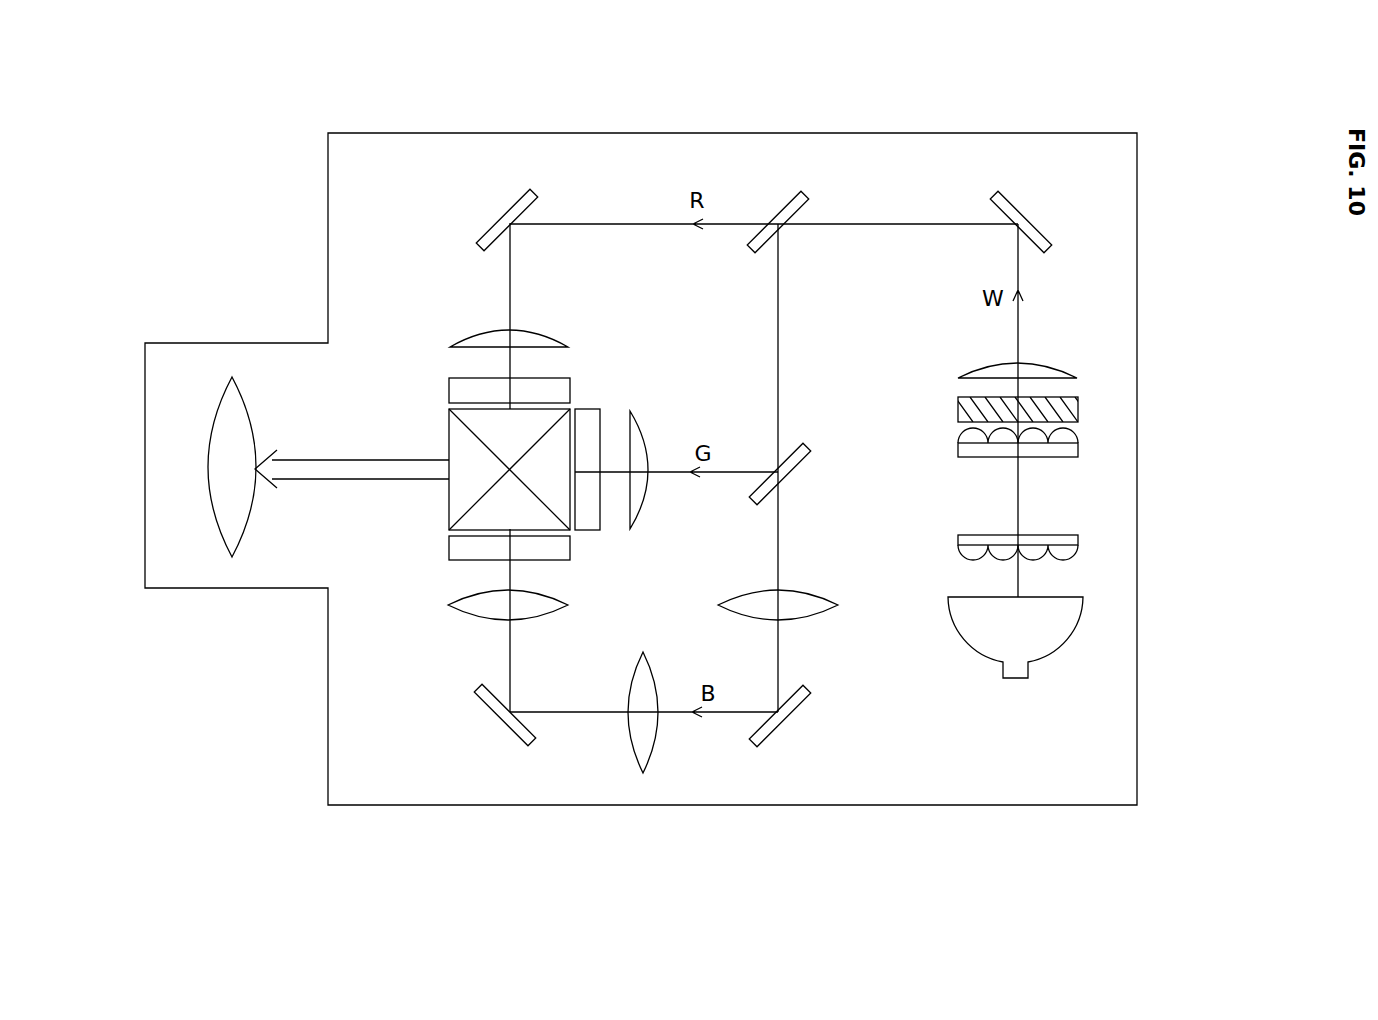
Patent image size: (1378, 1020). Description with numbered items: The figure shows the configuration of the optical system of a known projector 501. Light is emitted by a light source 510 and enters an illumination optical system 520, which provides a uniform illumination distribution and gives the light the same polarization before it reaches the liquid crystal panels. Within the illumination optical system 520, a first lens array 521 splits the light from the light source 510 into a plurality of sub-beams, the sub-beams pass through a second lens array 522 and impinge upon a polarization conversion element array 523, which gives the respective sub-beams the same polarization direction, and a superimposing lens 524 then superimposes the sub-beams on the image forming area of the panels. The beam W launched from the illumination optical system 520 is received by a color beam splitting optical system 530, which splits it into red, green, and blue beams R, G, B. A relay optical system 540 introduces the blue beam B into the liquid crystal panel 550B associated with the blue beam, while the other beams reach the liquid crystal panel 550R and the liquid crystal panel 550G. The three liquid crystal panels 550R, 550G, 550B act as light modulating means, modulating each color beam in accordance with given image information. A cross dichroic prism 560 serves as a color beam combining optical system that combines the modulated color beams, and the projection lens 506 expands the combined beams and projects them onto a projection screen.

The projector 501 is at (1000, 133).
The projection lens 506 is at (218, 395).
The light source 510 is at (1082, 637).
The illumination optical system 520 is at (1125, 536).
The first lens array 521 is at (1078, 540).
The second lens array 522 is at (1078, 447).
The polarization conversion element array 523 is at (1078, 403).
The superimposing lens 524 is at (1077, 375).
The color beam splitting optical system 530 is at (623, 149).
The relay optical system 540 is at (585, 798).
The liquid crystal panel 550R is at (572, 395).
The liquid crystal panel 550G is at (592, 532).
The liquid crystal panel 550B is at (448, 547).
The cross dichroic prism 560 is at (449, 432).